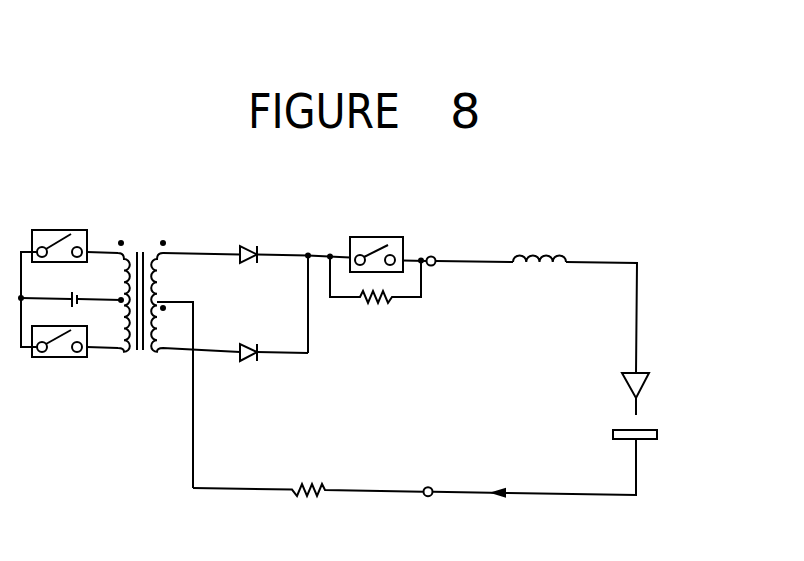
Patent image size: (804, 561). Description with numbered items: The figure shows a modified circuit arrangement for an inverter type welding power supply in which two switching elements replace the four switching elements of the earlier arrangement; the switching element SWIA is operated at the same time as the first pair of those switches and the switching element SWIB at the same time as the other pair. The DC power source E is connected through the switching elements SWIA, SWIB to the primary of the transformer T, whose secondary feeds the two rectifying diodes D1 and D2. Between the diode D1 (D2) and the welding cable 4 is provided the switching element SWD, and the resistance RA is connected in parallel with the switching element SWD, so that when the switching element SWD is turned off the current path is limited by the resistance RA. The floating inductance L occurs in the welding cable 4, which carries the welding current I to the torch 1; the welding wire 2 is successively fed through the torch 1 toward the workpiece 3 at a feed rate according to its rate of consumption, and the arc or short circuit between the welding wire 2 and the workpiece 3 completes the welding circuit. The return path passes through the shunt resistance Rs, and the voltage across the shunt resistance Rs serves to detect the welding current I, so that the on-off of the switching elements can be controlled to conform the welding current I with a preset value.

The torch 1 is at (622, 385).
The welding wire 2 is at (640, 409).
The workpiece 3 is at (657, 434).
The welding cable 4 is at (474, 259).
The switching element SW1A SWIA is at (59, 234).
The switching element SW2A SWIB is at (59, 354).
The DC power source E is at (72, 290).
The transformer T is at (163, 279).
The rectifying diode D1 is at (274, 242).
The rectifying diode D2 is at (274, 366).
The switching element SWD is at (388, 242).
The resistance RA is at (375, 292).
The floating inductance L is at (539, 243).
The welding current I is at (469, 482).
The shunt resistance Rs is at (308, 475).